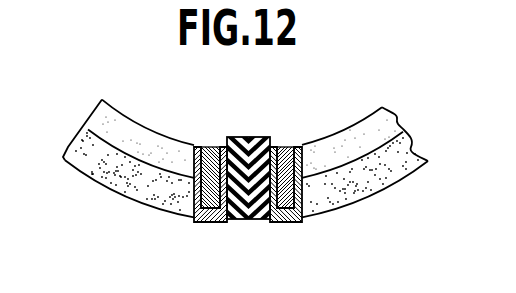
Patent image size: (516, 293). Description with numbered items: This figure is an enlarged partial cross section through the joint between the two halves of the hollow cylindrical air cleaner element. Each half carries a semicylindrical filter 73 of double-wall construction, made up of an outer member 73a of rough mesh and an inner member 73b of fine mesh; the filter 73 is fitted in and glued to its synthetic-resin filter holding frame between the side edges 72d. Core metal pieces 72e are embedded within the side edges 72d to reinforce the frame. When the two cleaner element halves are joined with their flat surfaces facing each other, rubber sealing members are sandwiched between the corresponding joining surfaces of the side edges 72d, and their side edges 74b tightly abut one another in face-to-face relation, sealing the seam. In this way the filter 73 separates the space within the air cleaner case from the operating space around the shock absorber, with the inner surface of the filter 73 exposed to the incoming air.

The semicylindrical filter 73 is at (68, 168).
The outer member 73a is at (118, 182).
The inner member 73b is at (118, 116).
The side edges 72d is at (184, 214).
The core metal pieces 72e is at (212, 210).
The side edges of rubber sealing member 74b is at (236, 136).